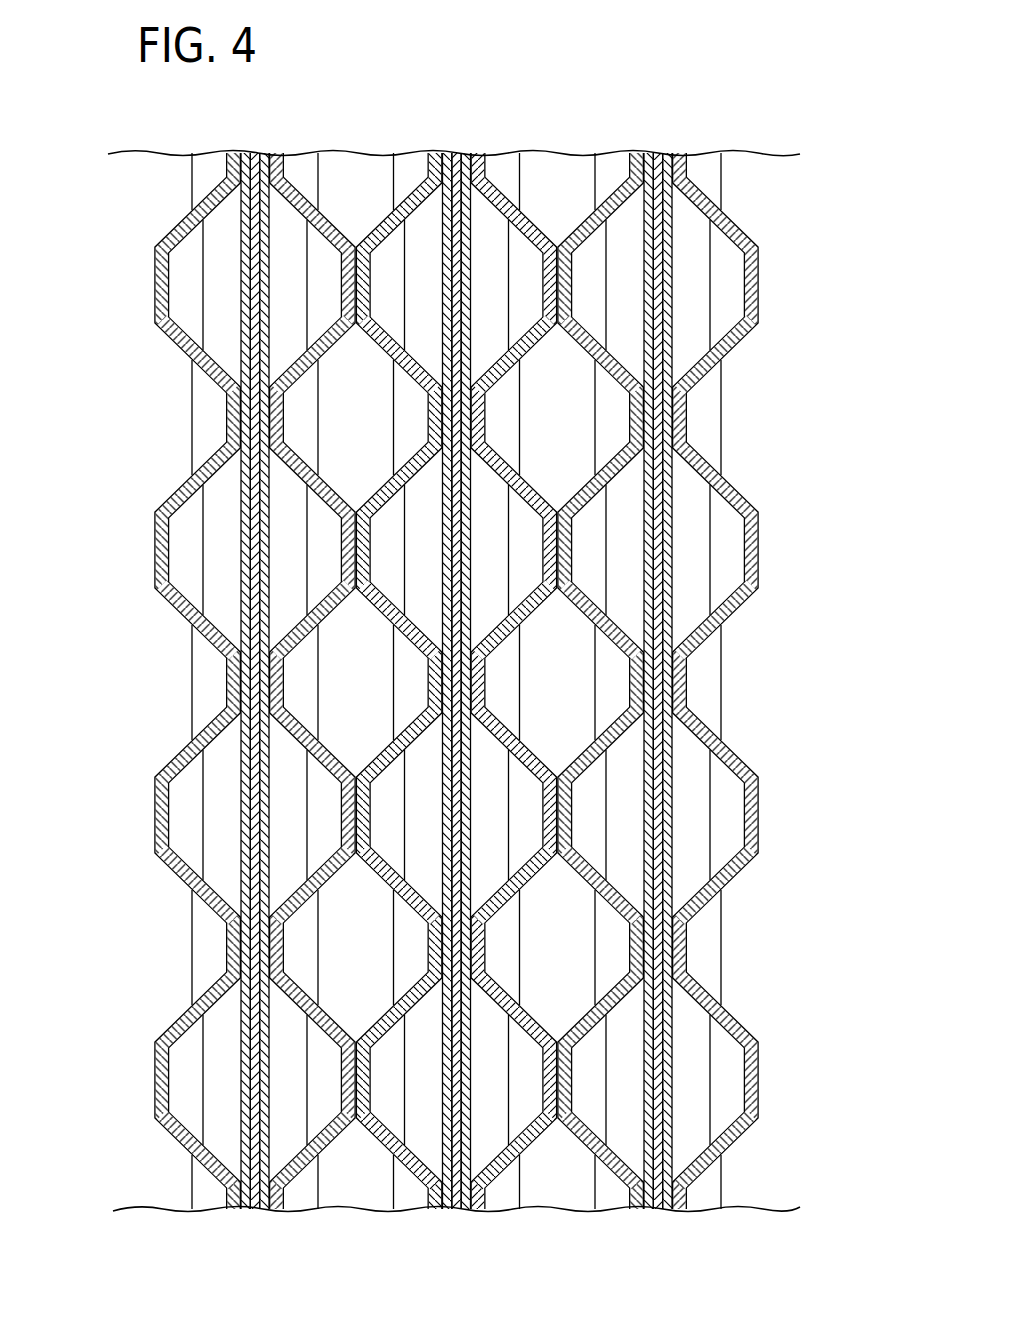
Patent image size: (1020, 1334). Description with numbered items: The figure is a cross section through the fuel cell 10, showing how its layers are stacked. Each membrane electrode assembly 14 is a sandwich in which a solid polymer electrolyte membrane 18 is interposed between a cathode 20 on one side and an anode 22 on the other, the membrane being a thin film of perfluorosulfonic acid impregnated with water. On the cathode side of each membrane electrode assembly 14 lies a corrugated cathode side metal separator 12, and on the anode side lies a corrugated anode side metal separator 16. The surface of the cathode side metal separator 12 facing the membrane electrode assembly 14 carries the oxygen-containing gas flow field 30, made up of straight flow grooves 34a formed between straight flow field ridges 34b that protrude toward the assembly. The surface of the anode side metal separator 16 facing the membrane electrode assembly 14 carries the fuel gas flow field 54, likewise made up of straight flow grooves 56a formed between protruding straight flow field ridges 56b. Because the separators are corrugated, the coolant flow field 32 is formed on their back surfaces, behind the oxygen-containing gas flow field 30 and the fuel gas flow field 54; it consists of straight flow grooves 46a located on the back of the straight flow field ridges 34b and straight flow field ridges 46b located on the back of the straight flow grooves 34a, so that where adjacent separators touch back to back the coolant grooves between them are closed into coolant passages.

The fuel cell 10 is at (603, 619).
The cathode side metal separator 12 is at (662, 641).
The membrane electrode assembly 14 is at (461, 643).
The anode side metal separator 16 is at (606, 641).
The solid polymer electrolyte membrane 18 is at (463, 157).
The cathode 20 is at (458, 258).
The anode 22 is at (436, 216).
The oxygen-containing gas flow field 30 is at (483, 289).
The coolant flow field 32 is at (454, 420).
The straight flow grooves 34a is at (522, 530).
The straight flow field ridges 34b is at (436, 748).
The straight flow grooves 46a is at (497, 683).
The straight flow field ridges 46b is at (552, 546).
The fuel gas flow field 54 is at (418, 293).
The straight flow grooves 56a is at (390, 798).
The straight flow field ridges 56b is at (443, 1033).